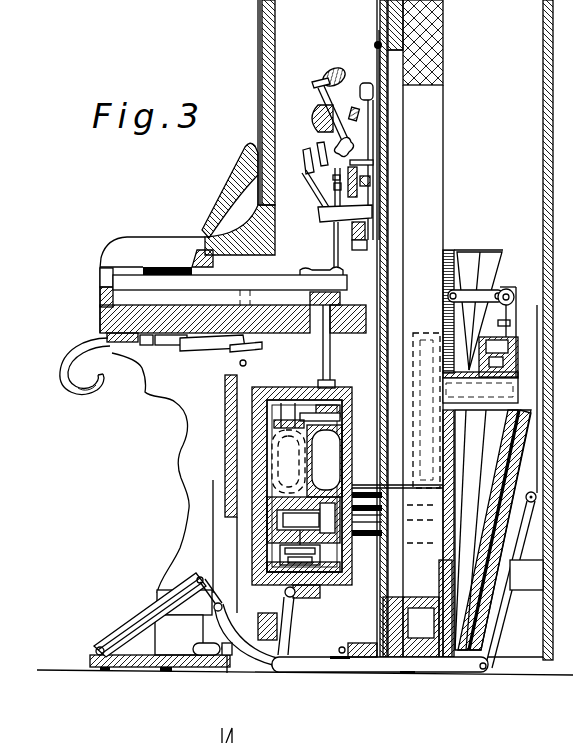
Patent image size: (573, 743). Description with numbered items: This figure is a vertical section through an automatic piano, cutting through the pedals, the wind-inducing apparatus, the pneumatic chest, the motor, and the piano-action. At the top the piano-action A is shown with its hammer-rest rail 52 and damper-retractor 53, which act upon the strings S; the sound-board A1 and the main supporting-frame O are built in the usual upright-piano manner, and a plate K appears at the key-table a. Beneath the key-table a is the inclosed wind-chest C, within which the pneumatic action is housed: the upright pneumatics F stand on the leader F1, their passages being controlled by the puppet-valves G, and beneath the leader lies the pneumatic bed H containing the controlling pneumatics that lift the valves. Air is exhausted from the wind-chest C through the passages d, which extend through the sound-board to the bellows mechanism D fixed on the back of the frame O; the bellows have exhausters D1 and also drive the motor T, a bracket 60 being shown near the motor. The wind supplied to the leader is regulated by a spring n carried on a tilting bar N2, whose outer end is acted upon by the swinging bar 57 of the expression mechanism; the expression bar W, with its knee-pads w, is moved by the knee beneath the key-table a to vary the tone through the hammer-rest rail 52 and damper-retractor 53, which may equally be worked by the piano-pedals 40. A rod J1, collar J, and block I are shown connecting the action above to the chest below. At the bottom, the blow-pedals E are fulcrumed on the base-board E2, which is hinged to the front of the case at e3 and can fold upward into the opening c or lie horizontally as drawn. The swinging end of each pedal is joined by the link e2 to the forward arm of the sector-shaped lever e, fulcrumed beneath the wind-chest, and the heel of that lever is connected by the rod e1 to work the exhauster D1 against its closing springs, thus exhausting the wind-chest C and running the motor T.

The piano-action A is at (330, 170).
The sound-board A1 is at (386, 248).
The strings S is at (376, 66).
The hammer-rest rail 52 is at (318, 128).
The damper-retractor 53 is at (371, 183).
The table plate K is at (128, 284).
The key-table a is at (233, 313).
The expression bar W is at (105, 459).
The knee-pads w is at (76, 388).
The swinging bar 57 is at (186, 350).
The tilting bar N2 is at (220, 347).
The spring n is at (236, 486).
The rod J1 is at (331, 345).
The collar J is at (336, 384).
The valve block I is at (341, 412).
The wind-chest C is at (272, 460).
The upright pneumatics F is at (307, 450).
The leader F1 is at (278, 527).
The puppet-valves G is at (318, 570).
The pneumatic bed H is at (325, 585).
The opening c is at (222, 520).
The tubes or passages d is at (397, 438).
The motor T is at (479, 304).
The bracket 60 is at (515, 372).
The bellows mechanism D is at (487, 533).
The exhausters D1 is at (500, 622).
The main supporting-frame O is at (417, 608).
The blow-pedals E is at (145, 618).
The base-board E2 is at (130, 668).
The sector-shaped lever e is at (263, 633).
The connecting-rod e1 is at (358, 670).
The link e2 is at (218, 603).
The hinge e3 is at (227, 660).
The piano-pedals 40 is at (197, 650).